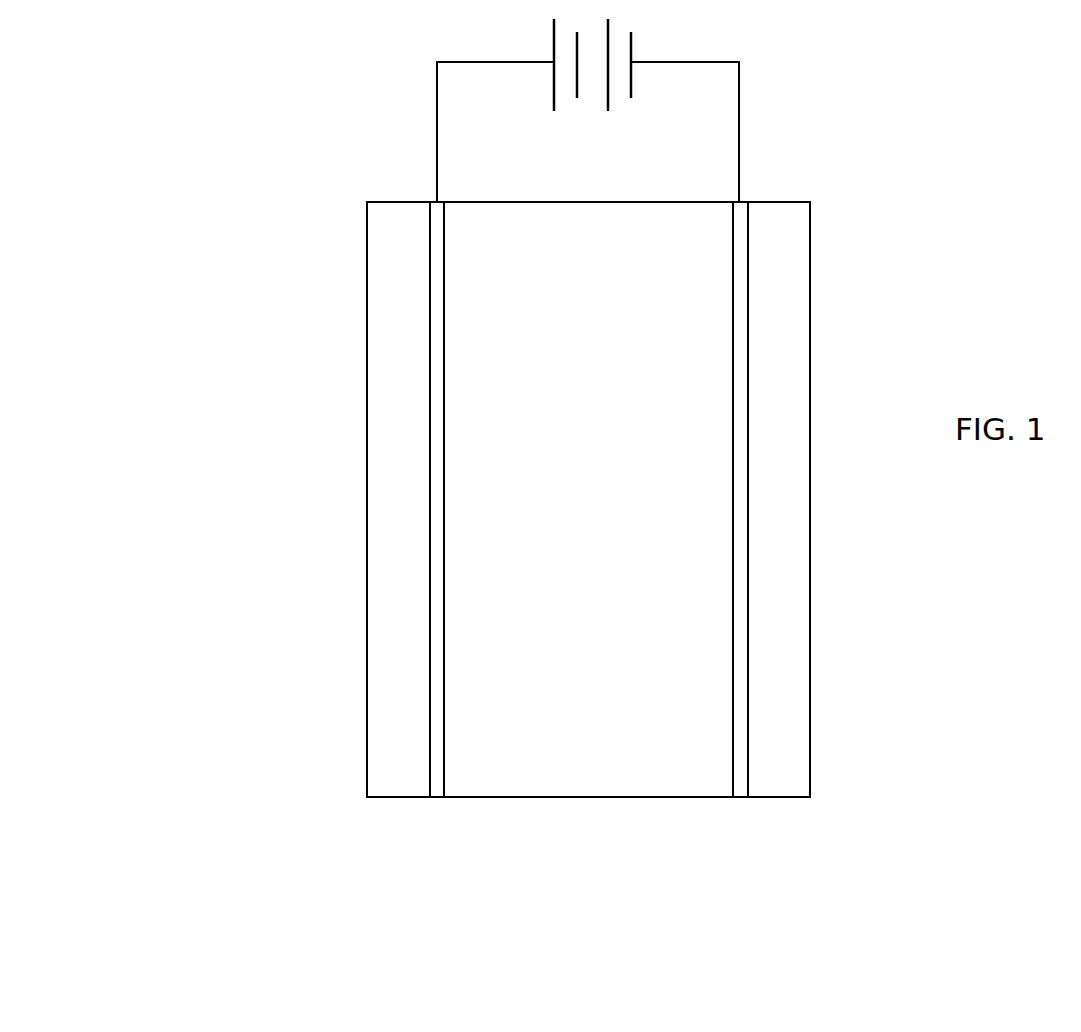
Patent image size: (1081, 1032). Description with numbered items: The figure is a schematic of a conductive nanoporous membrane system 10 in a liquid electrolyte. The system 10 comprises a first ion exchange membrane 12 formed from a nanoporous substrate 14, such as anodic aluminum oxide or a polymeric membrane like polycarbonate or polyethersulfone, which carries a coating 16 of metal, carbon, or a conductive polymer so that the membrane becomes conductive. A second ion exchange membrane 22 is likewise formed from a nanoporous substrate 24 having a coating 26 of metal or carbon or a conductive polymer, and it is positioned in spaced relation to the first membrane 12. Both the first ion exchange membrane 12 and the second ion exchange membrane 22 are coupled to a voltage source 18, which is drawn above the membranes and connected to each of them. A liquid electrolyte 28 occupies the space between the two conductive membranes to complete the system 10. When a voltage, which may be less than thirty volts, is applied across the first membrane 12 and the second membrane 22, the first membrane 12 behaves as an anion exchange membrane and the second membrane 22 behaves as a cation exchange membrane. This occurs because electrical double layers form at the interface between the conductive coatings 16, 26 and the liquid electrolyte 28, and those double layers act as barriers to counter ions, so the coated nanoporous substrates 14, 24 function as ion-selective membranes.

The conductive nanoporous membrane system 10 is at (268, 107).
The first ion exchange membrane 12 is at (398, 202).
The nanoporous substrate 14 is at (398, 797).
The coating 16 is at (445, 767).
The voltage source 18 is at (631, 53).
The second ion exchange membrane 22 is at (780, 202).
The nanoporous substrate 24 is at (779, 797).
The coating 26 is at (740, 767).
The liquid electrolyte 28 is at (618, 469).